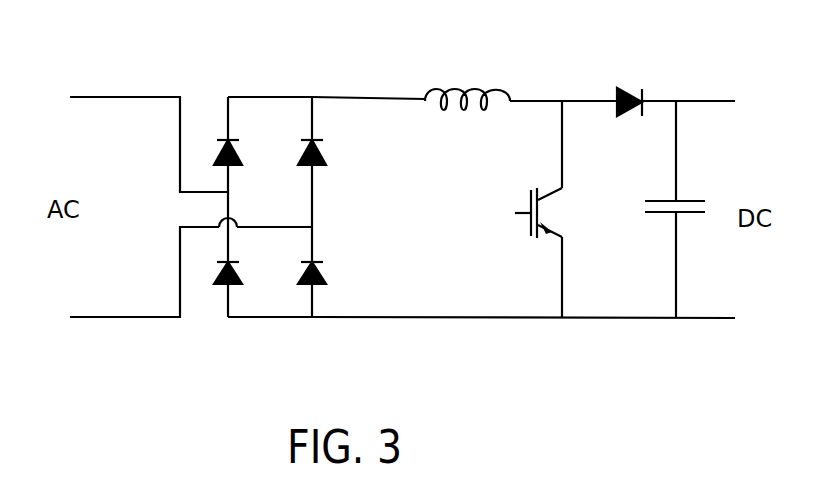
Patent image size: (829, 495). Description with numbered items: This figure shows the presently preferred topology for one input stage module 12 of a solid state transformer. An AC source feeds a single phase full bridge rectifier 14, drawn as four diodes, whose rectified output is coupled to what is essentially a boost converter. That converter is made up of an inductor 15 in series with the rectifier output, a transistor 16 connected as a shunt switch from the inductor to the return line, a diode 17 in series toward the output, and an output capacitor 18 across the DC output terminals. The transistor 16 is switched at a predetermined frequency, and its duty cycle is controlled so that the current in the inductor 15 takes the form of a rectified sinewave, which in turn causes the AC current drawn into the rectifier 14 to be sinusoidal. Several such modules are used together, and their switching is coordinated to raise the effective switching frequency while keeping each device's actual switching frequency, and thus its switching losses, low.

The input stage module 12 is at (571, 66).
The single phase full bridge rectifier 14 is at (262, 74).
The inductor 15 is at (473, 82).
The transistor 16 is at (562, 150).
The diode 17 is at (628, 84).
The output capacitor 18 is at (676, 154).